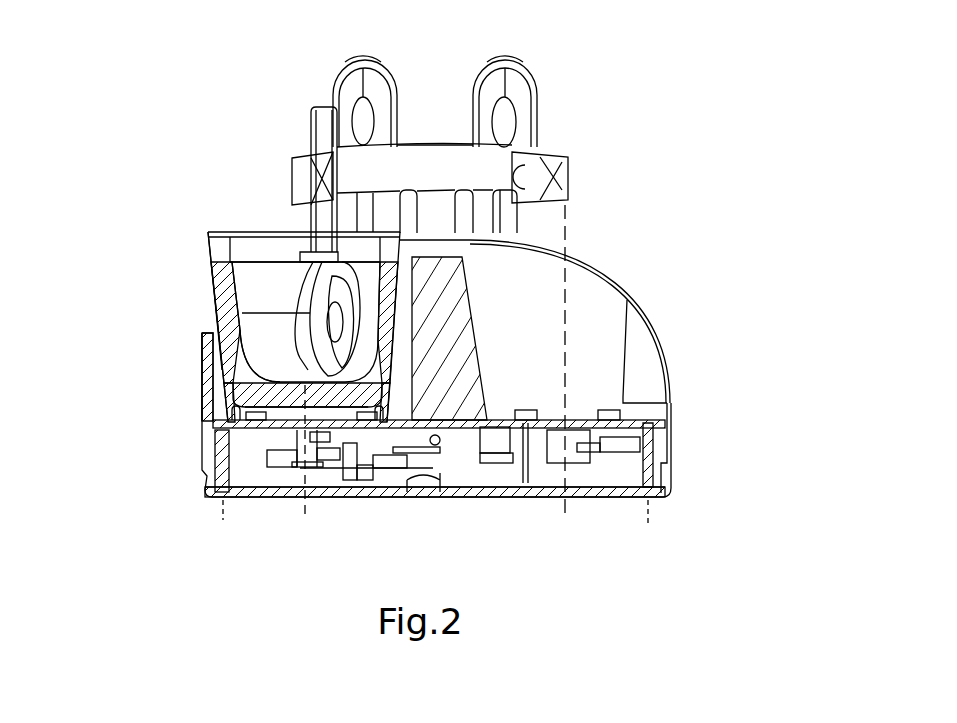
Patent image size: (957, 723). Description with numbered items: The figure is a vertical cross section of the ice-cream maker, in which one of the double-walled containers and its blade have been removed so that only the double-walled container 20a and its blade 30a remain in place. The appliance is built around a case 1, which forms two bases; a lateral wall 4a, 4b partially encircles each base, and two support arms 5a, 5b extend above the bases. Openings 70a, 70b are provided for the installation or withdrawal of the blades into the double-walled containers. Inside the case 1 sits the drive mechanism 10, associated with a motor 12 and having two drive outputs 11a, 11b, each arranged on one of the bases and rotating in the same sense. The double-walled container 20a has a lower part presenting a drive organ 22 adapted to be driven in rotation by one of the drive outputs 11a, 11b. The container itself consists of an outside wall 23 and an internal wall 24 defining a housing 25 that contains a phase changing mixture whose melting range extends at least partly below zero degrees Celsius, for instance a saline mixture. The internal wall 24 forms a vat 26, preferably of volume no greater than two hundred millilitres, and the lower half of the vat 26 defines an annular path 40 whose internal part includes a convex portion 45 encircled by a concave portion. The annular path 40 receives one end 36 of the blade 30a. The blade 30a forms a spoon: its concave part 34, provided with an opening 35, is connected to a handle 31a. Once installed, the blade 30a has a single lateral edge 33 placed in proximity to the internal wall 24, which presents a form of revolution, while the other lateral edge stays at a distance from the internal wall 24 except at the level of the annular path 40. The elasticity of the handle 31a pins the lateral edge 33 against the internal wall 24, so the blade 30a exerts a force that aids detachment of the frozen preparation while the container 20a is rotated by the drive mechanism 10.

The case 1 is at (687, 450).
The lateral wall 4a is at (212, 367).
The lateral wall 4b is at (645, 373).
The support arm 5a is at (347, 173).
The support arm 5b is at (487, 172).
The drive mechanism 10 is at (373, 470).
The drive output 11a is at (298, 412).
The drive output 11b is at (583, 412).
The motor 12 is at (447, 475).
The double-walled container 20a is at (213, 308).
The drive organ 22 is at (242, 425).
The outside wall 23 is at (213, 272).
The internal wall 24 is at (243, 335).
The housing 25 is at (222, 373).
The vat 26 is at (230, 308).
The blade 30a is at (317, 333).
The handle 31a is at (315, 233).
The lateral edge 33 is at (335, 333).
The concave part 34 is at (353, 85).
The opening 35 is at (363, 113).
The end 36 is at (362, 62).
The annular path 40 is at (203, 334).
The convex portion 45 is at (262, 300).
The opening 70a is at (267, 165).
The opening 70b is at (580, 208).